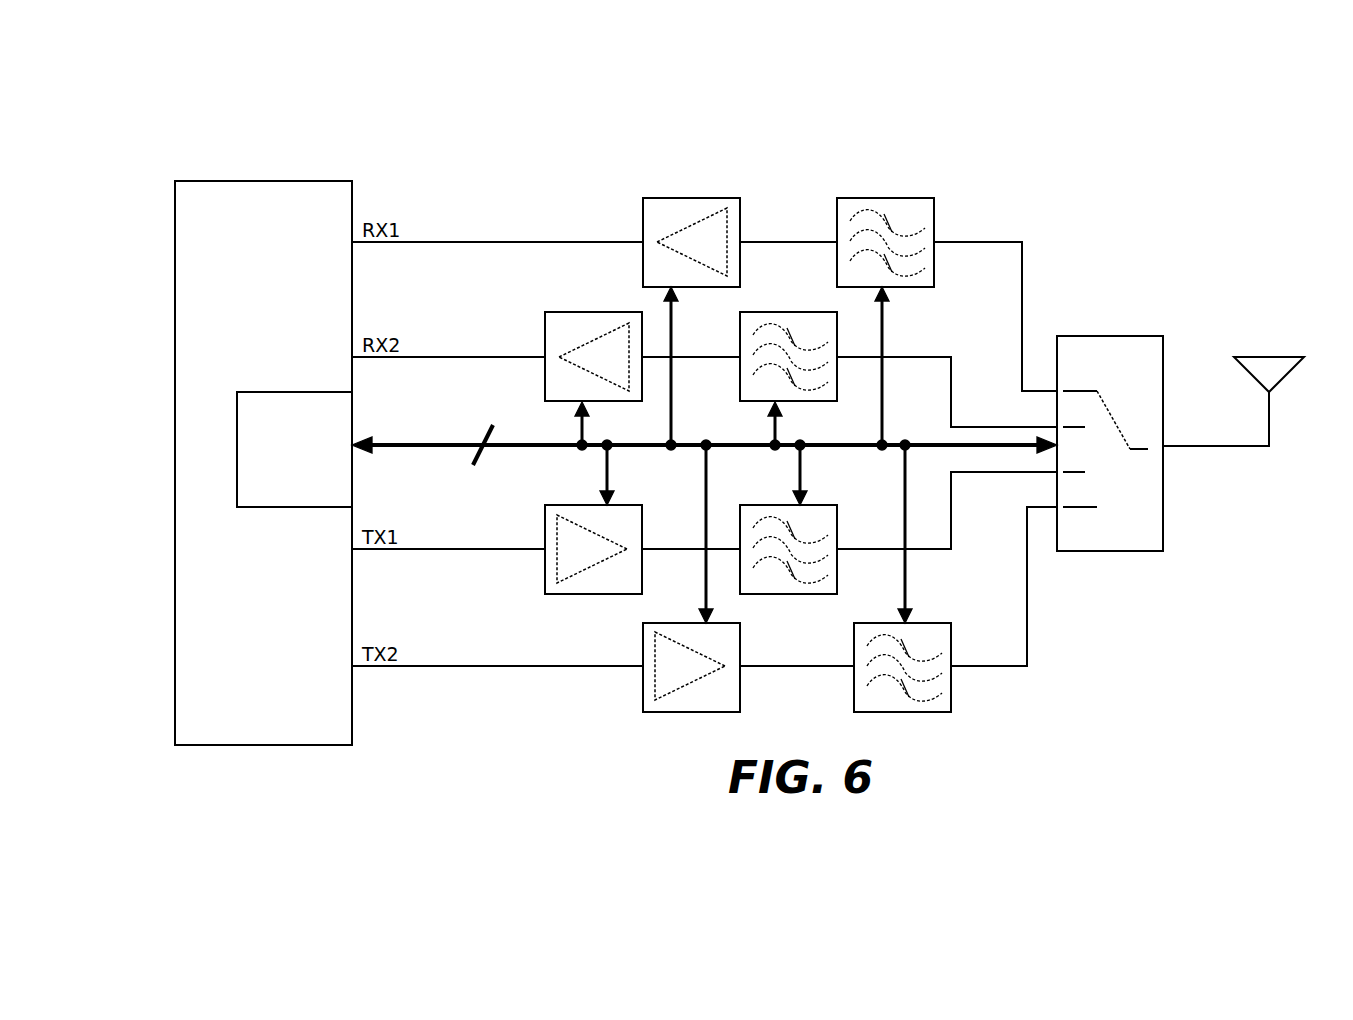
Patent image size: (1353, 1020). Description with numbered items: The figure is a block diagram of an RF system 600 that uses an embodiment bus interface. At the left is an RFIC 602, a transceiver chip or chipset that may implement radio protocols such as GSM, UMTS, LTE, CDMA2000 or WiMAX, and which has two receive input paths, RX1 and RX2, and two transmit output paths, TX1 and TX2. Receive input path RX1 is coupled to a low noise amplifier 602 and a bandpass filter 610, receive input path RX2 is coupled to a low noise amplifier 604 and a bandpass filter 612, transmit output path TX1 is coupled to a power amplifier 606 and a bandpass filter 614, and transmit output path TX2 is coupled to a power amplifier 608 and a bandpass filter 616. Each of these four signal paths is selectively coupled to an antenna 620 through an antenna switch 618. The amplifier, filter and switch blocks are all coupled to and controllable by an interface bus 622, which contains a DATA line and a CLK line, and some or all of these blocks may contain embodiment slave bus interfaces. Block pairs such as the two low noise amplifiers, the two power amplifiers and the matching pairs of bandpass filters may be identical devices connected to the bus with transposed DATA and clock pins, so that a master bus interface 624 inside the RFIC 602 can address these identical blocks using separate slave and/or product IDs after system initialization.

The RF system 600 is at (162, 110).
The RFIC 602 is at (259, 181).
The low noise amplifier 604 is at (588, 312).
The power amplifier 606 is at (565, 505).
The power amplifier 608 is at (645, 645).
The bandpass filter 610 is at (888, 198).
The bandpass filter 612 is at (798, 312).
The bandpass filter 614 is at (768, 505).
The bandpass filter 616 is at (858, 655).
The antenna switch 618 is at (1105, 335).
The antenna 620 is at (1270, 357).
The interface bus 622 is at (482, 442).
The master bus interface 624 is at (319, 391).